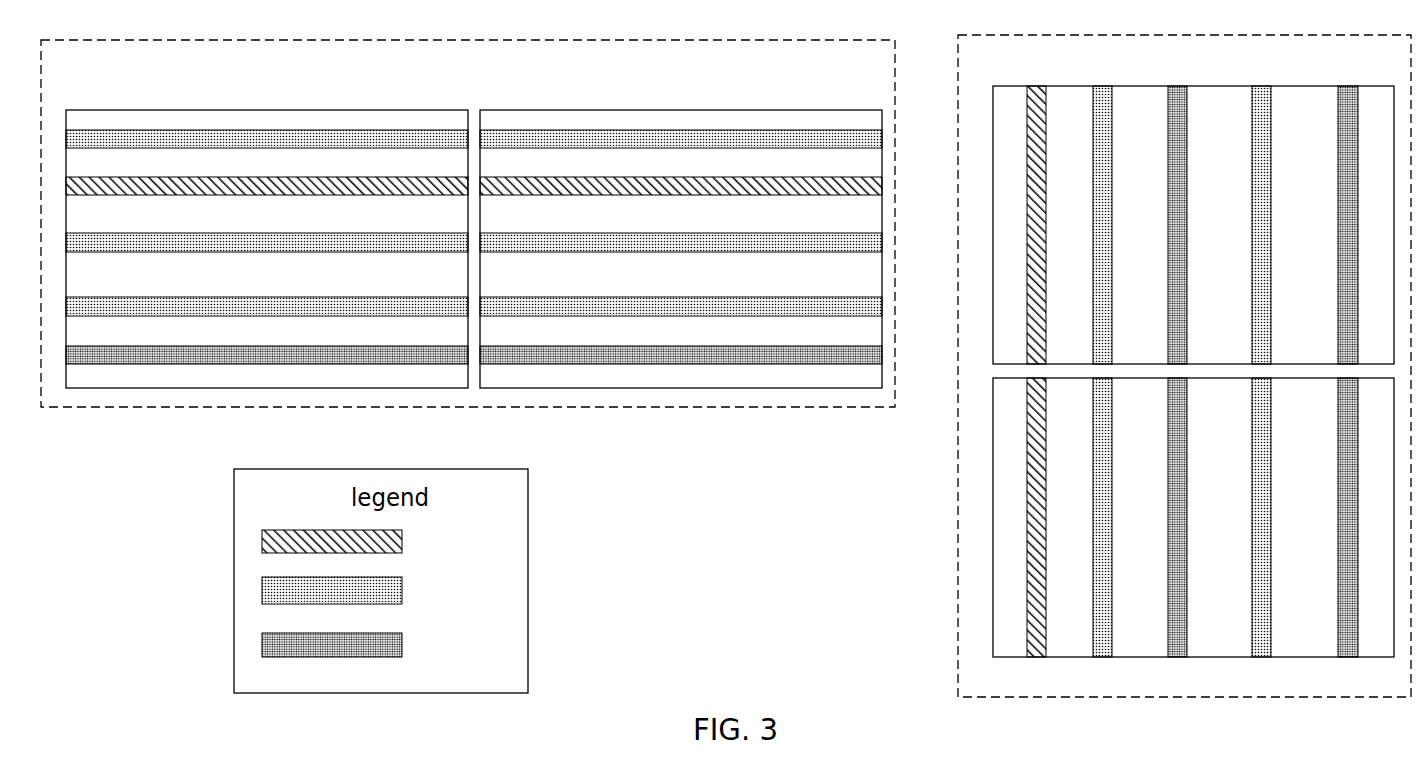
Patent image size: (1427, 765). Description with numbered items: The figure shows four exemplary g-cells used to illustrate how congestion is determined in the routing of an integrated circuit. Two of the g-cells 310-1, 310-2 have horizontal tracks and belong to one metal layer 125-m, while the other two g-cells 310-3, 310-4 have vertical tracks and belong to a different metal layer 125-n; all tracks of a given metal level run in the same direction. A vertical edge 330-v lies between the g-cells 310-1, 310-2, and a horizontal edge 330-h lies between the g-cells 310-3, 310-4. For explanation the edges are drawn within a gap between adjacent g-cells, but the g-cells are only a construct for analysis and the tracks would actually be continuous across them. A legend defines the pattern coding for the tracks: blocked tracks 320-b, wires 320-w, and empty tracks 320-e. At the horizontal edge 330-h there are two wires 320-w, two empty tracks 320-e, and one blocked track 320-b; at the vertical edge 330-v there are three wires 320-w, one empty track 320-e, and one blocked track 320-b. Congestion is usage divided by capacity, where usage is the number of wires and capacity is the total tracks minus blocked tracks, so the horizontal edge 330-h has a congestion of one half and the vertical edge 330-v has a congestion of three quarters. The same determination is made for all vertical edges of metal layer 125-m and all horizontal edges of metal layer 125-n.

The metal layer 125-m is at (790, 408).
The metal layer 125-n is at (958, 603).
The g-cell 310-1 is at (221, 110).
The g-cell 310-2 is at (690, 108).
The g-cell 310-3 is at (1140, 85).
The g-cell 310-4 is at (1137, 657).
The blocked track 320-b is at (377, 542).
The wire 320-w is at (382, 593).
The empty track 320-e is at (379, 648).
The vertical edge 330-v is at (472, 100).
The horizontal edge 330-h is at (980, 381).